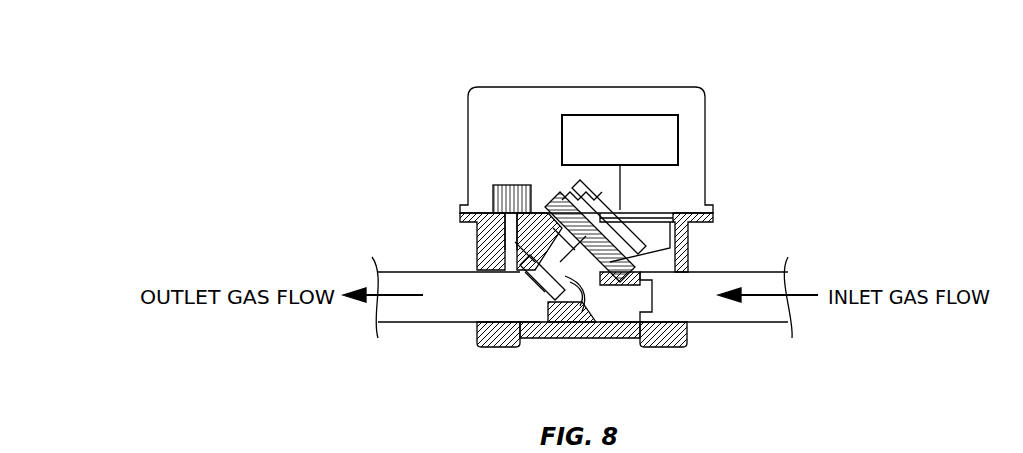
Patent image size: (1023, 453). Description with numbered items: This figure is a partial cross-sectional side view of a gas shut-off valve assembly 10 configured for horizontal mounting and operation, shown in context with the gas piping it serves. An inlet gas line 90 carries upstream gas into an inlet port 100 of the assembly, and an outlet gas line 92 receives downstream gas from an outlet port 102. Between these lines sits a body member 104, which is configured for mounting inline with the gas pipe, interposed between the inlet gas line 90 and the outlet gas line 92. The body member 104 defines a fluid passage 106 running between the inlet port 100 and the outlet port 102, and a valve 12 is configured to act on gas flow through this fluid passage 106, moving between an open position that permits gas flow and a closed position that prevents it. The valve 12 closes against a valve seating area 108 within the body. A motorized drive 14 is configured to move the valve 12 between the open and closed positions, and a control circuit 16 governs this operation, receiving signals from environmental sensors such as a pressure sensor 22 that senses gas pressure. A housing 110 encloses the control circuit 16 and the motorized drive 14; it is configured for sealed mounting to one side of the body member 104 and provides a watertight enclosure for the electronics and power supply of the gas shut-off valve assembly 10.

The gas shut-off valve assembly 10 is at (802, 44).
The valve 12 is at (600, 320).
The motorized drive 14 is at (660, 213).
The control circuit 16 is at (678, 129).
The pressure sensor 22 is at (528, 185).
The inlet gas line 90 is at (735, 272).
The outlet gas line 92 is at (412, 272).
The inlet port 100 is at (686, 264).
The outlet port 102 is at (500, 294).
The body member 104 is at (665, 348).
The fluid passage 106 is at (517, 240).
The valve seating area 108 is at (577, 314).
The housing 110 is at (468, 125).